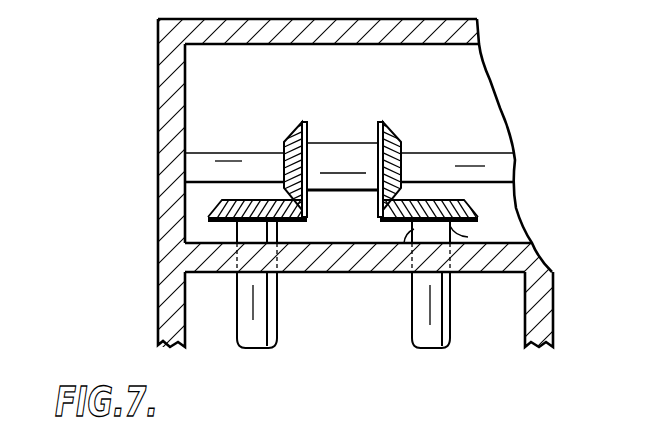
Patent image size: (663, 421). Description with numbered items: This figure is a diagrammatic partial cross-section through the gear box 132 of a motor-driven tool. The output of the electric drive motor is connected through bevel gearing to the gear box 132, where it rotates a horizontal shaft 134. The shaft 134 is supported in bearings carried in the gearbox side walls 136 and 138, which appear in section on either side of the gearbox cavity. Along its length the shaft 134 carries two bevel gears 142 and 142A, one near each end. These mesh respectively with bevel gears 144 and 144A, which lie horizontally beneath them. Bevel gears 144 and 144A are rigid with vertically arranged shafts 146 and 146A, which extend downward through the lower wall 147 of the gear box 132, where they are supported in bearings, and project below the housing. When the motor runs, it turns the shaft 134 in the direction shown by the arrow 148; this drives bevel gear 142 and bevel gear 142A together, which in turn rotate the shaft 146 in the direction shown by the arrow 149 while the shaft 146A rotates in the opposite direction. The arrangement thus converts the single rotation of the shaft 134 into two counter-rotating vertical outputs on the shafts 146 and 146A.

The gear box 132 is at (158, 63).
The shaft 134 is at (458, 152).
The gearbox side wall 136 is at (553, 318).
The gearbox side wall 138 is at (158, 303).
The bevel gear 142 is at (400, 133).
The bevel gear 142A is at (292, 138).
The bevel gear 144 is at (478, 212).
The bevel gear 144A is at (208, 214).
The shaft 146 is at (438, 328).
The shaft 146A is at (267, 330).
The lower wall 147 is at (392, 270).
The arrow 148 is at (358, 143).
The arrow 149 is at (455, 233).